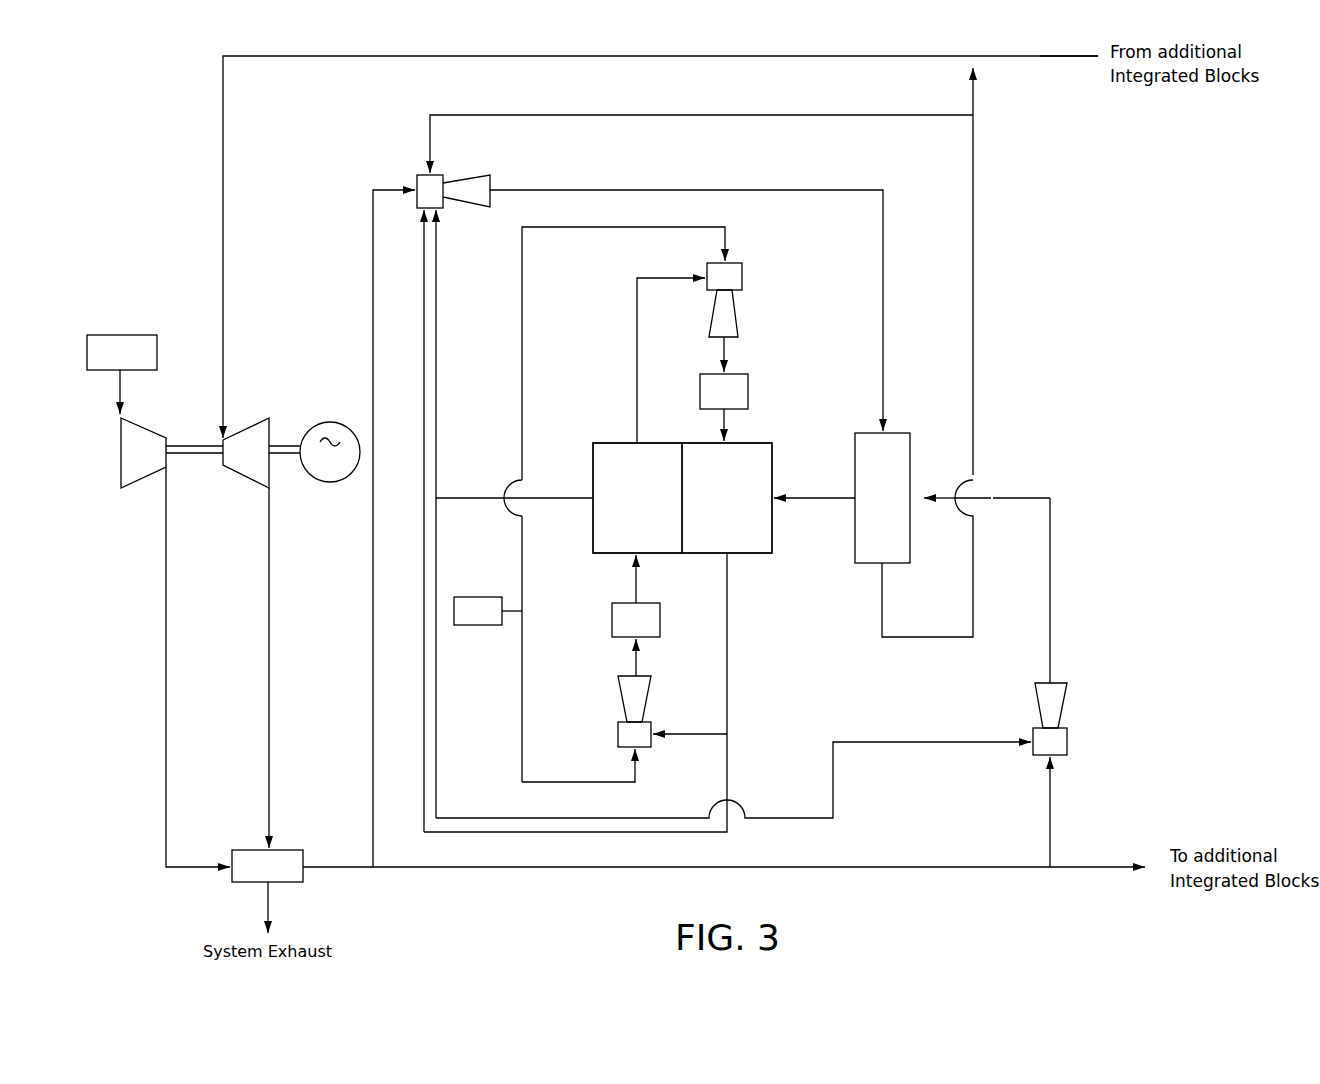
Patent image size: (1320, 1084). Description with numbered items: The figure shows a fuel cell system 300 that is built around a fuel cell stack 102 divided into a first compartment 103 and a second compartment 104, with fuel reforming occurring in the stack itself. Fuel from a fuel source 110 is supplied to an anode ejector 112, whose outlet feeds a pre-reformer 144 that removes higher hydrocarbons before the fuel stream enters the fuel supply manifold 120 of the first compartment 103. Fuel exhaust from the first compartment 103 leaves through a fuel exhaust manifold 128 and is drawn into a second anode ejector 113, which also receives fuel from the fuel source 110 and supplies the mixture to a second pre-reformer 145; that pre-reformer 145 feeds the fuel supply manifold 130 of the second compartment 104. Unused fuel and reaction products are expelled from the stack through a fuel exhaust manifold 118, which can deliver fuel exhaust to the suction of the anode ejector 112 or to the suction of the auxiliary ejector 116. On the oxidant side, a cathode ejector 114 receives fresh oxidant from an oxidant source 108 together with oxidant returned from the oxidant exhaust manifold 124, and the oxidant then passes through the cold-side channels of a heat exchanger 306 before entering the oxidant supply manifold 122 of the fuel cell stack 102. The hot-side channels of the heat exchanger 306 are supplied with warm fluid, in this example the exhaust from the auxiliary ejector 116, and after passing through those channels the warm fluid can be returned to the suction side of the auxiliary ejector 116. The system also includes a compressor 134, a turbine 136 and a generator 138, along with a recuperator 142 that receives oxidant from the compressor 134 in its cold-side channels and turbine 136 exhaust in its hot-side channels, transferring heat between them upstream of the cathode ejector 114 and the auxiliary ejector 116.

The fuel cell system 300 is at (149, 113).
The oxidant source 108 is at (109, 362).
The compressor 134 is at (130, 462).
The turbine 136 is at (234, 462).
The generator 138 is at (317, 467).
The recuperator 142 is at (255, 876).
The auxiliary ejector 116 is at (374, 176).
The anode ejector 113 is at (748, 291).
The pre-reformer 145 is at (711, 401).
The fuel cell stack 102 is at (707, 491).
The first compartment 103 is at (615, 511).
The second compartment 104 is at (707, 511).
The heat exchanger 306 is at (869, 507).
The fuel source 110 is at (465, 621).
The pre-reformer 144 is at (623, 630).
The anode ejector 112 is at (581, 742).
The cathode ejector 114 is at (1076, 756).
The fuel exhaust manifold 118 is at (730, 556).
The fuel supply manifold 120 is at (640, 557).
The oxidant supply manifold 122 is at (774, 502).
The oxidant exhaust manifold 124 is at (591, 501).
The fuel exhaust manifold 128 is at (633, 442).
The fuel supply manifold 130 is at (733, 438).